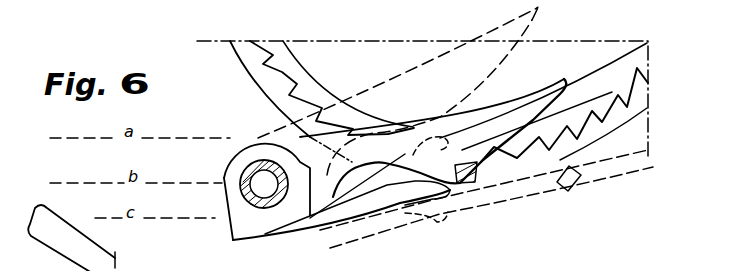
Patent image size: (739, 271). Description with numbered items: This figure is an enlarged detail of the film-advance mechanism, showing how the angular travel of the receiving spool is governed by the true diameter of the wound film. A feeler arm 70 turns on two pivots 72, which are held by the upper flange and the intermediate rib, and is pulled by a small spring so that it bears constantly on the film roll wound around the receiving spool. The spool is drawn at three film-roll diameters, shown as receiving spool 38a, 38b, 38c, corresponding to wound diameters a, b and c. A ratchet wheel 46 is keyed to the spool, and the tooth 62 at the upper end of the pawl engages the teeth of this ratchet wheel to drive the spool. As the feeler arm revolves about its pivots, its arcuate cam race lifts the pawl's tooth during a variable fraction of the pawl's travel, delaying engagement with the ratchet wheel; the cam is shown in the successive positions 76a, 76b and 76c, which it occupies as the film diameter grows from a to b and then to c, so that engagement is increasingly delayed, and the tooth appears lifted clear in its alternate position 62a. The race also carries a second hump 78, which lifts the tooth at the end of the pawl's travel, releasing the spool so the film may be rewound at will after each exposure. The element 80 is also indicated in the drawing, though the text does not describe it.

The receiving spool 38a is at (327, 84).
The receiving spool 38b is at (517, 184).
The receiving spool 38c is at (600, 178).
The ratchet wheel 46 is at (280, 73).
The tooth 62 is at (475, 185).
The tooth 62a is at (567, 192).
The feeler arm 70 is at (404, 207).
The pivots 72 is at (240, 178).
The cam 76a is at (489, 39).
The cam 76b is at (548, 90).
The cam 76c is at (570, 158).
The second hump 78 is at (384, 164).
The handle 80 is at (67, 246).